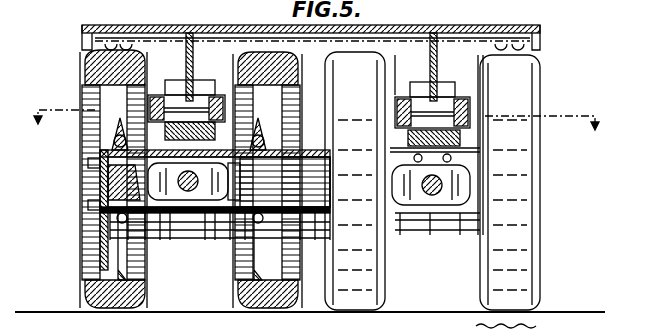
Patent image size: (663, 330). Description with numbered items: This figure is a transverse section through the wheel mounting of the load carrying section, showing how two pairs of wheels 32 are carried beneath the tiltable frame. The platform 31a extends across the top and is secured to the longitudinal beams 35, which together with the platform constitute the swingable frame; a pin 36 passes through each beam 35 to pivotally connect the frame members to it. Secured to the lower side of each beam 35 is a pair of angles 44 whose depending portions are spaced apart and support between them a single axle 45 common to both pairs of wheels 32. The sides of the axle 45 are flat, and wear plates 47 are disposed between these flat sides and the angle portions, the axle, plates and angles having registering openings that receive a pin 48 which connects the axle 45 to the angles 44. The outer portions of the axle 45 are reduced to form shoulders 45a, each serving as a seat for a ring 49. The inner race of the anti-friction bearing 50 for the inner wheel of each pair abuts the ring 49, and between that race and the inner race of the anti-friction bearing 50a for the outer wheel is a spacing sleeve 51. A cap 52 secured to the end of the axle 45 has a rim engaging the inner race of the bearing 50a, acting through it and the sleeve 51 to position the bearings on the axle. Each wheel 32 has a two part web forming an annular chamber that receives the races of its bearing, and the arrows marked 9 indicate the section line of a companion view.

The platform 31a is at (150, 26).
The longitudinal beams 35 is at (192, 33).
The pin 36 is at (210, 92).
The wheels 32 is at (142, 302).
The angles 44 is at (256, 150).
The axle 45 is at (306, 183).
The shoulders 45a is at (267, 186).
The wear plates 47 is at (400, 195).
The pin 48 is at (150, 176).
The ring 49 is at (235, 176).
The anti-friction bearing 50 is at (283, 150).
The anti-friction bearing 50a is at (100, 236).
The spacing sleeve 51 is at (210, 222).
The cap 52 is at (100, 176).
The section line 9- 9 is at (315, 131).